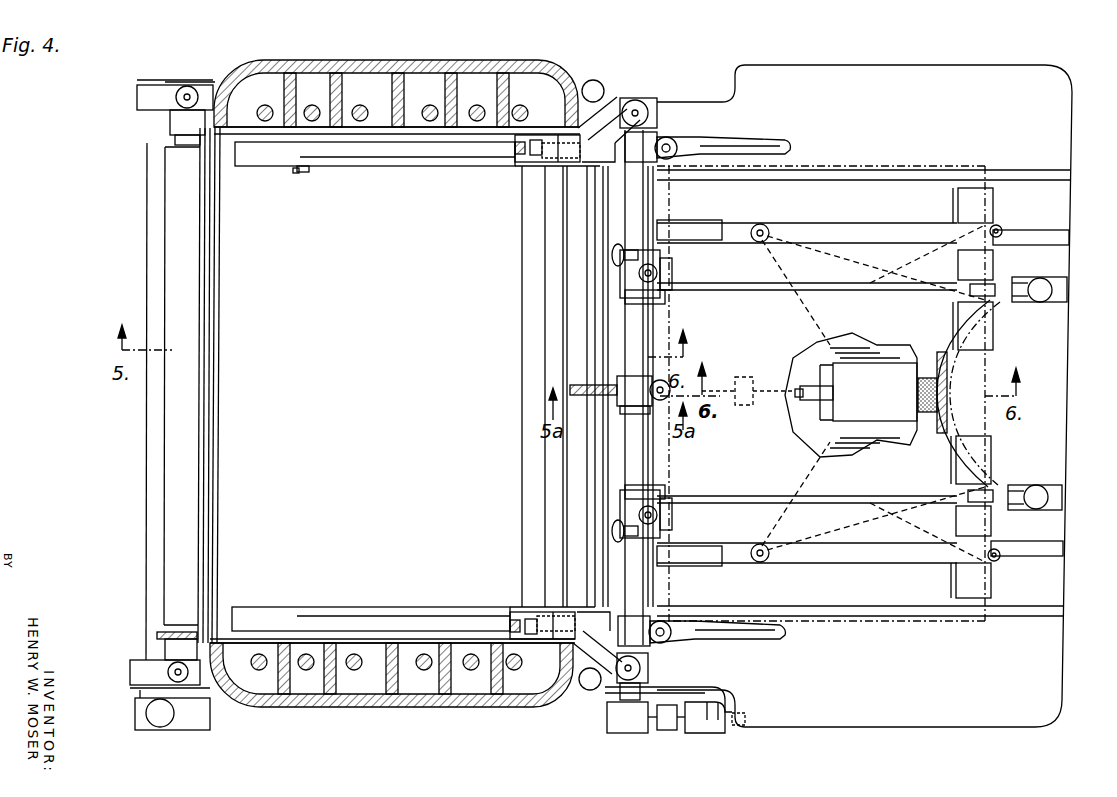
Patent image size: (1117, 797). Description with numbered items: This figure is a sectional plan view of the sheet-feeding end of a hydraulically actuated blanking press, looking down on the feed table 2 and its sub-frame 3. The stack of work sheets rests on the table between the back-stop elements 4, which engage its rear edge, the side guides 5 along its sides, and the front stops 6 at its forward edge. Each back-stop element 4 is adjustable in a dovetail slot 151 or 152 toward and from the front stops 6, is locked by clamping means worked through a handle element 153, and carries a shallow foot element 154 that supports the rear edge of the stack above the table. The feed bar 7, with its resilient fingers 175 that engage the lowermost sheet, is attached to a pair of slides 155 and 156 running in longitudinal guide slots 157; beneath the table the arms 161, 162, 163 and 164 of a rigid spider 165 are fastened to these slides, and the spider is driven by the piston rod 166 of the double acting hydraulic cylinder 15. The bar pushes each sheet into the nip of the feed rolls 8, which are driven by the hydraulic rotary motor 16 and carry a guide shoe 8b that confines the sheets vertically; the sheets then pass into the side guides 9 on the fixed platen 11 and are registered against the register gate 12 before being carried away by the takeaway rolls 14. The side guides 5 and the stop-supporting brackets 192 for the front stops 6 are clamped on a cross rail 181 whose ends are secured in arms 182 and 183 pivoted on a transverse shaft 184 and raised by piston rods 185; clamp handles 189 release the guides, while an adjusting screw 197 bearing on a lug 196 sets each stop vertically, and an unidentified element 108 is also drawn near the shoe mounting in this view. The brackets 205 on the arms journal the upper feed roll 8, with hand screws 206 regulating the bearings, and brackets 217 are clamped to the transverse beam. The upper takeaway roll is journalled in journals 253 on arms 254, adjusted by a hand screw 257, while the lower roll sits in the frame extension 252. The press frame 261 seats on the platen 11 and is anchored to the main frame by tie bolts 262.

The feed table 2 is at (938, 727).
The sub-frame 3 is at (872, 622).
The back-stop element 4 is at (1060, 305).
The side guides 5 is at (768, 155).
The front stops 6 is at (665, 273).
The feed bar 7 is at (995, 355).
The feed rolls 8 is at (660, 205).
The guide shoe 8b is at (585, 385).
The side guides 9 is at (410, 157).
The fixed platen 11 is at (384, 373).
The register gate 12 is at (219, 357).
The takeaway rolls 14 is at (165, 418).
The hydraulic cylinder 15 is at (726, 376).
The hydraulic rotary motor 16 is at (706, 733).
The screw block 108 is at (630, 410).
The dovetail slot 151 is at (756, 290).
The dovetail slot 152 is at (748, 495).
The handle element 153 is at (1042, 285).
The foot element 154 is at (972, 292).
The slide 155 is at (864, 550).
The slide 156 is at (846, 238).
The longitudinal guide slots 157 is at (1069, 238).
The spider arm 161 is at (805, 525).
The spider arm 162 is at (940, 522).
The spider arm 163 is at (772, 238).
The spider arm 164 is at (945, 258).
The spider 165 is at (890, 400).
The piston rod 166 is at (770, 386).
The resilient fingers 175 is at (975, 205).
The cross rail 181 is at (638, 452).
The arm 182 is at (612, 695).
The arm 183 is at (606, 105).
The transverse shaft 184 is at (545, 320).
The rod 185 is at (518, 152).
The clamp handles 189 is at (672, 140).
The stop-supporting bracket 192 is at (660, 302).
The lug 196 is at (612, 255).
The adjusting screw 197 is at (660, 284).
The bracket 205 is at (655, 100).
The hand screw 206 is at (638, 100).
The bracket 217 is at (597, 80).
The frame extension 252 is at (192, 80).
The journal 253 is at (175, 120).
The arm 254 is at (137, 92).
The hand screw 257 is at (182, 88).
The press frame 261 is at (385, 60).
The tie bolts 262 is at (265, 105).